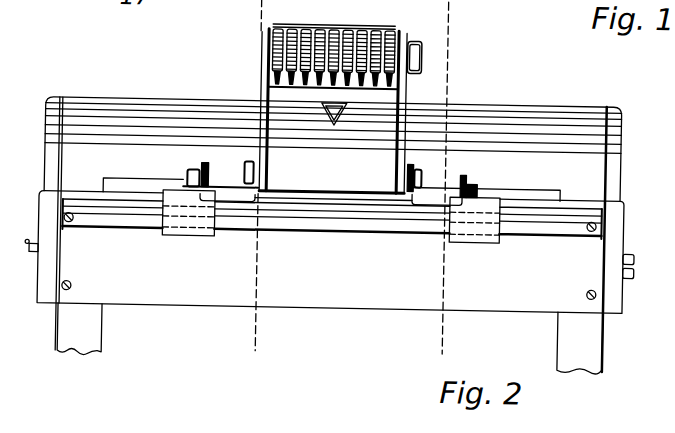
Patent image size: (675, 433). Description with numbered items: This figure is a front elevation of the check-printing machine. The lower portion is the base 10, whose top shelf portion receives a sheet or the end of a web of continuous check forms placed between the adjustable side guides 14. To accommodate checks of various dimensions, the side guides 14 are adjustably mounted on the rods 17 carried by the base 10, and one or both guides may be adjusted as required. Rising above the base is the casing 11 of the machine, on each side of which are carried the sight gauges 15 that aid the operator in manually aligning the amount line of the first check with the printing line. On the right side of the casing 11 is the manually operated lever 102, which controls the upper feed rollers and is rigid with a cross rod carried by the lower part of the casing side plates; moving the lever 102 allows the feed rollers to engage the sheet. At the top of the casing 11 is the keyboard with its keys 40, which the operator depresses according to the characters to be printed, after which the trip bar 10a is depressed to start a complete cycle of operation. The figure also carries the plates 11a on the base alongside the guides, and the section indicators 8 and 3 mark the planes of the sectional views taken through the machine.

The base 10 is at (330, 235).
The casing 11 is at (333, 109).
The side plates 11a is at (330, 172).
The adjustable side guides 14 is at (477, 186).
The sight gauges 15 is at (413, 180).
The rods 17 is at (153, 221).
The keys 40 is at (352, 21).
The trip bar 10a is at (417, 39).
The manually operated lever 102 is at (438, 177).
The section line 8 is at (254, 4).
The section line 3 is at (452, 6).